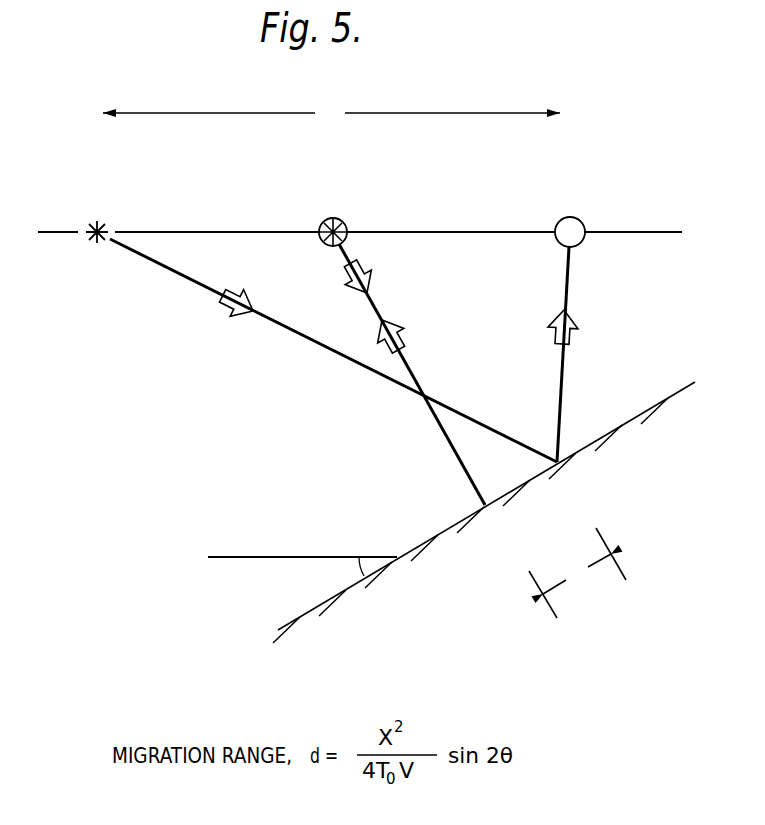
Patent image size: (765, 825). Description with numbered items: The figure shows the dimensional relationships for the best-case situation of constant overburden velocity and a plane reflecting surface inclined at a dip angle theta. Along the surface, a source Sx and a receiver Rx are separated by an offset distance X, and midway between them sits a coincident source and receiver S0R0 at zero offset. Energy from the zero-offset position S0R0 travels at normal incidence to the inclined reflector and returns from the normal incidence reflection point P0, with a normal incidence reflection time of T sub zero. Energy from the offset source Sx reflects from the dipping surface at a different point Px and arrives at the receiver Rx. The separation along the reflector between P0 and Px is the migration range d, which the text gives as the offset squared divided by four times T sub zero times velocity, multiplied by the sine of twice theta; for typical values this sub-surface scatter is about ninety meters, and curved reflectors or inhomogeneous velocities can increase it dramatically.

The source Sx is at (321, 317).
The coincident source and receiver S0R0 is at (389, 339).
The receiver Rx is at (566, 317).
The reflection point at offset X Px is at (563, 488).
The normal incidence reflection point P0 is at (498, 529).
The migration range d is at (577, 573).
The dip angle theta is at (302, 574).
The offset distance X is at (331, 114).